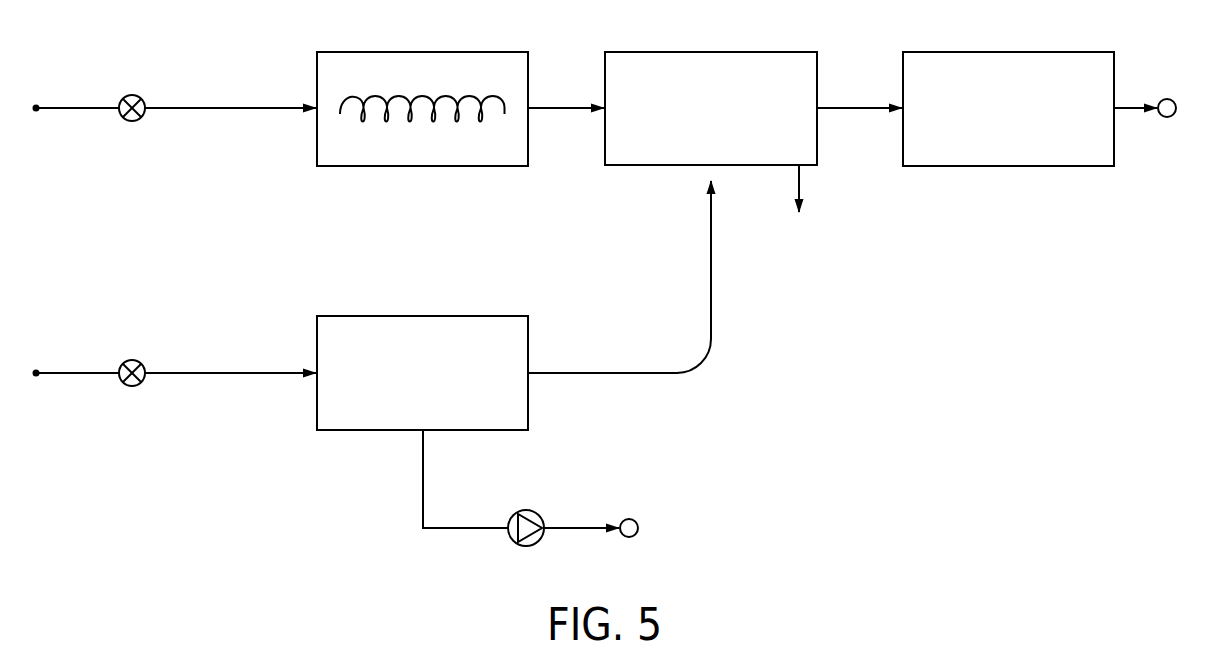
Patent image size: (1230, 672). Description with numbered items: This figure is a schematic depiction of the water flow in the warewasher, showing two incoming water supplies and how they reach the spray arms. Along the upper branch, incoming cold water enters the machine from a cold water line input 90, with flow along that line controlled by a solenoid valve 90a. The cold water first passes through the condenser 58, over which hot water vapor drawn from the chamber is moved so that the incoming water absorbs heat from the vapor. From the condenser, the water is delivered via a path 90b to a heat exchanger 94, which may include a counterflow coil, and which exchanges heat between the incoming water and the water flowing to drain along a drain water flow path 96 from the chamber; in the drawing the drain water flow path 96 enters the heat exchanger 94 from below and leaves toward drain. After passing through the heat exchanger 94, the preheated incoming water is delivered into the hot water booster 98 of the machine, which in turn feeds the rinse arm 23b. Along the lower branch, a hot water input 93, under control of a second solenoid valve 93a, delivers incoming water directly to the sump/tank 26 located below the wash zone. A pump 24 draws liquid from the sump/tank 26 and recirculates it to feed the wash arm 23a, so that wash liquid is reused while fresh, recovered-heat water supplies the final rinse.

The cold water line input 90 is at (36, 108).
The solenoid valve 90a is at (132, 95).
The condenser 58 is at (425, 60).
The path 90b is at (559, 108).
The heat exchanger 94 is at (692, 62).
The hot water booster 98 is at (1007, 62).
The rinse arm 23b is at (1167, 99).
The drain water flow path 96 is at (711, 286).
The hot water input 93 is at (36, 373).
The solenoid valve 93a is at (132, 360).
The sump/tank 26 is at (440, 323).
The pump 24 is at (526, 510).
The wash arm 23a is at (630, 519).